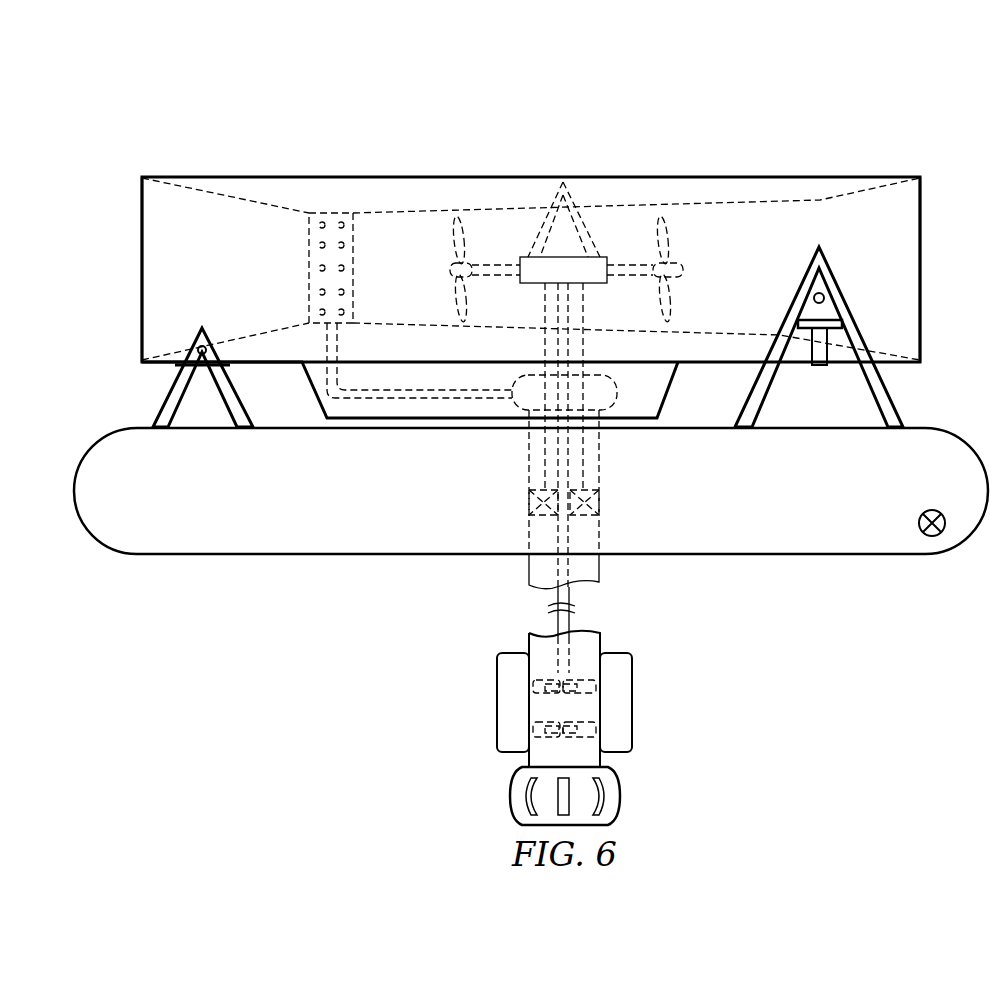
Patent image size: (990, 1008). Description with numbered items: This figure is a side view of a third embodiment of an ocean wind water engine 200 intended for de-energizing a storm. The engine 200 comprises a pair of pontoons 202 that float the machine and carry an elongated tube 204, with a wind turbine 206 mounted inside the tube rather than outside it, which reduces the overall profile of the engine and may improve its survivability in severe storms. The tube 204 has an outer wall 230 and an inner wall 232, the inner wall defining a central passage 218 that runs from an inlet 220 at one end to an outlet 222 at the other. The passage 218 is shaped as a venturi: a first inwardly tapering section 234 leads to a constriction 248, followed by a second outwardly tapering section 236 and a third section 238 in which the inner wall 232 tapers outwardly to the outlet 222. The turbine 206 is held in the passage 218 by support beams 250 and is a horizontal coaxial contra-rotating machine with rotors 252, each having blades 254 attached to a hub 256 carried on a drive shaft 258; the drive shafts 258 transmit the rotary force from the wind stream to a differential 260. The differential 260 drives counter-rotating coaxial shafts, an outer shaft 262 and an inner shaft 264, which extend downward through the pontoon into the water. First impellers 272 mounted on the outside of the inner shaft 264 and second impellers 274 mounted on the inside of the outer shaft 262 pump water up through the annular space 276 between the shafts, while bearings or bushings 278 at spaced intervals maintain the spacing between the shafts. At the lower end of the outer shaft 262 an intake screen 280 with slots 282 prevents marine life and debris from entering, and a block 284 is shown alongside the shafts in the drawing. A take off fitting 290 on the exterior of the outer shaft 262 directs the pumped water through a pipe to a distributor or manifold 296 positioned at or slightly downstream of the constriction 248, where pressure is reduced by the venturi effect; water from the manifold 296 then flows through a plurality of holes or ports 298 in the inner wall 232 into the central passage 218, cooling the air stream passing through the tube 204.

The engine 200 is at (346, 92).
The pontoons 202 is at (385, 556).
The elongated tube 204 is at (727, 176).
The wind turbine 206 is at (434, 238).
The central passage 218 is at (207, 287).
The inlet 220 is at (142, 264).
The outlet 222 is at (922, 265).
The outer wall 230 is at (180, 177).
The inner wall 232 is at (236, 205).
The first inwardly tapering section 234 is at (258, 335).
The second outwardly tapering section 236 is at (678, 330).
The third section 238 is at (862, 192).
The constriction 248 is at (308, 211).
The support beams 250 is at (580, 198).
The rotors 252 is at (458, 268).
The blades 254 is at (670, 242).
The hub 256 is at (680, 278).
The drive shafts 258 is at (497, 284).
The differential 260 is at (600, 284).
The outer shaft 262 is at (528, 572).
The inner shaft 264 is at (568, 538).
The first impellers 272 is at (560, 706).
The second impellers 274 is at (565, 712).
The annular space 276 is at (578, 586).
The bearings or bushings 278 is at (545, 520).
The intake screen 280 is at (510, 798).
The slots 282 is at (620, 798).
The left clamp block 284 is at (497, 672).
The take off fitting 290 is at (600, 398).
The distributor or manifold 296 is at (312, 237).
The holes or ports 298 is at (320, 262).